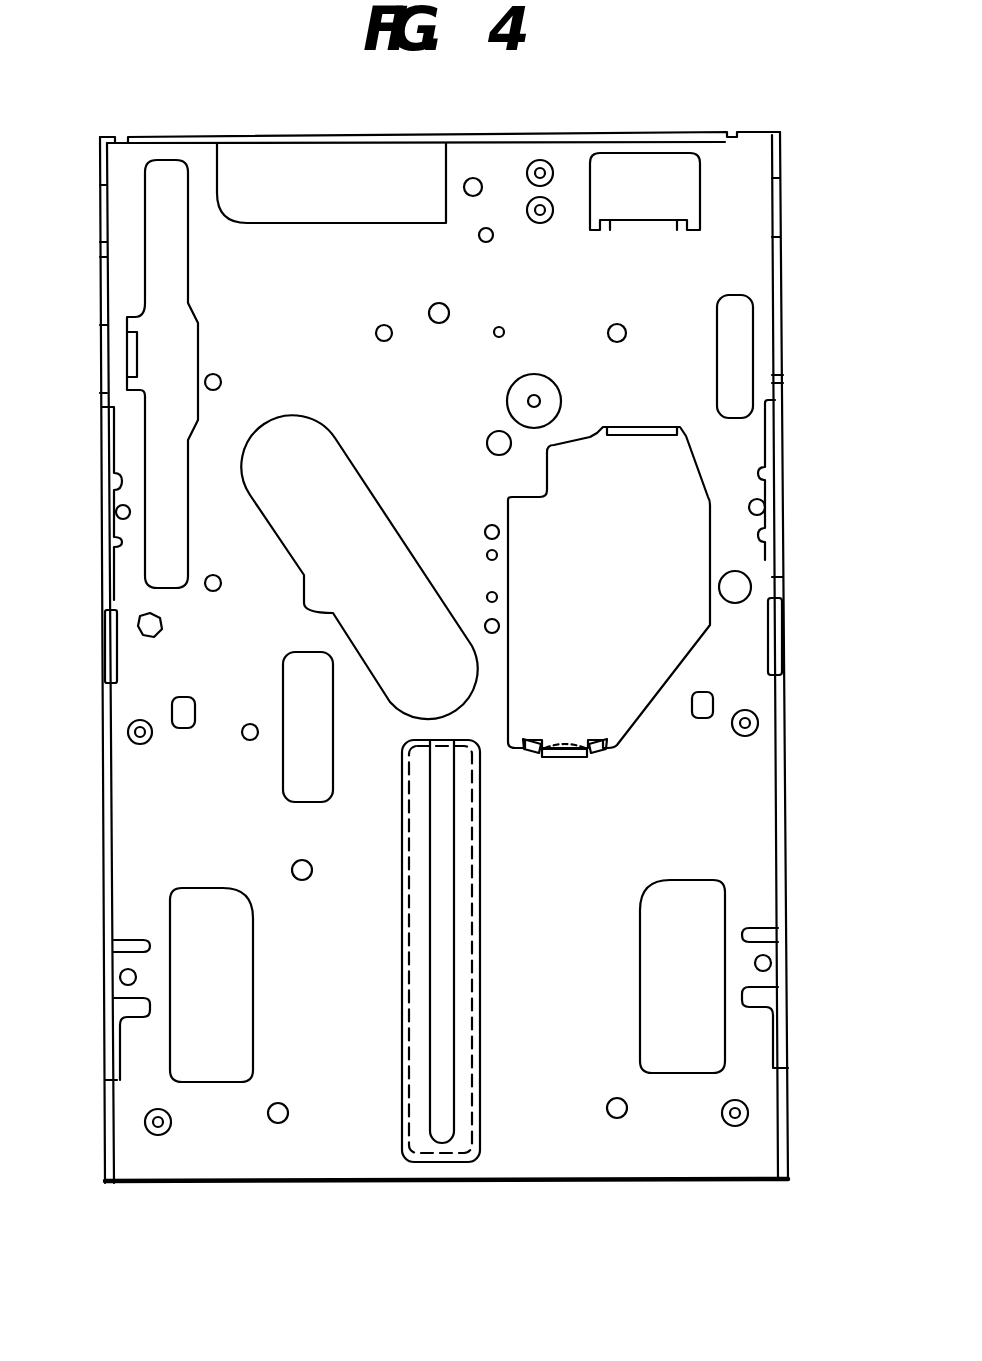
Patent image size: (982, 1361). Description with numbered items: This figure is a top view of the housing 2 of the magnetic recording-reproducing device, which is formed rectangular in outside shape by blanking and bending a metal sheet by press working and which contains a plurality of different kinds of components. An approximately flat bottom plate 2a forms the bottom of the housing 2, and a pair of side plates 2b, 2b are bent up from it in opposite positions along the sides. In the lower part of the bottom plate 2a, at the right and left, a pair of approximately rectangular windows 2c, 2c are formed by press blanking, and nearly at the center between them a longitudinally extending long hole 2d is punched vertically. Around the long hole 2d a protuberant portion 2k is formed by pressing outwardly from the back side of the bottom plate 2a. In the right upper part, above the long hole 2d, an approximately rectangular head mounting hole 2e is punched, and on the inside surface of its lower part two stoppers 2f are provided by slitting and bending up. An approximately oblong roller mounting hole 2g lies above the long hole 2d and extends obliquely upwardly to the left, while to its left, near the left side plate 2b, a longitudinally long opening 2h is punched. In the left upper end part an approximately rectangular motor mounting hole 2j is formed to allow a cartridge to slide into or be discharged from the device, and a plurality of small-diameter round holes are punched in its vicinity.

The housing 2 is at (793, 251).
The bottom plate 2a is at (665, 836).
The side plates 2b is at (100, 1136).
The windows 2c is at (228, 1057).
The long hole 2d is at (440, 1077).
The head mounting hole 2e is at (638, 602).
The stoppers 2f is at (600, 738).
The roller mounting hole 2g is at (322, 529).
The opening 2h is at (150, 239).
The motor mounting hole 2j is at (352, 167).
The protuberant portion 2k is at (465, 1082).